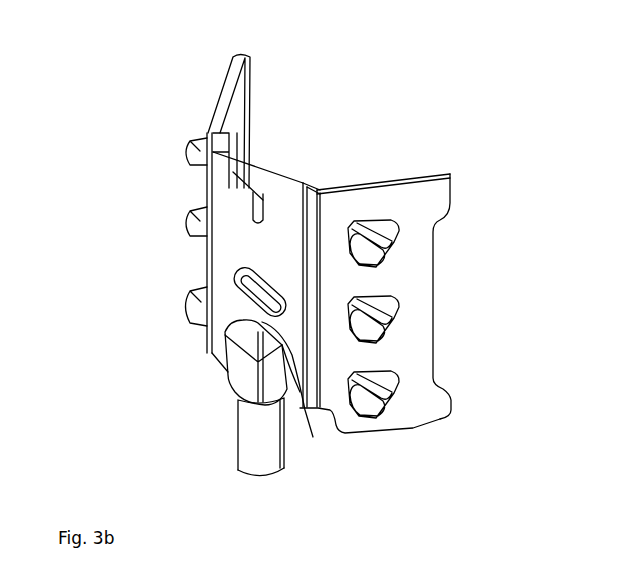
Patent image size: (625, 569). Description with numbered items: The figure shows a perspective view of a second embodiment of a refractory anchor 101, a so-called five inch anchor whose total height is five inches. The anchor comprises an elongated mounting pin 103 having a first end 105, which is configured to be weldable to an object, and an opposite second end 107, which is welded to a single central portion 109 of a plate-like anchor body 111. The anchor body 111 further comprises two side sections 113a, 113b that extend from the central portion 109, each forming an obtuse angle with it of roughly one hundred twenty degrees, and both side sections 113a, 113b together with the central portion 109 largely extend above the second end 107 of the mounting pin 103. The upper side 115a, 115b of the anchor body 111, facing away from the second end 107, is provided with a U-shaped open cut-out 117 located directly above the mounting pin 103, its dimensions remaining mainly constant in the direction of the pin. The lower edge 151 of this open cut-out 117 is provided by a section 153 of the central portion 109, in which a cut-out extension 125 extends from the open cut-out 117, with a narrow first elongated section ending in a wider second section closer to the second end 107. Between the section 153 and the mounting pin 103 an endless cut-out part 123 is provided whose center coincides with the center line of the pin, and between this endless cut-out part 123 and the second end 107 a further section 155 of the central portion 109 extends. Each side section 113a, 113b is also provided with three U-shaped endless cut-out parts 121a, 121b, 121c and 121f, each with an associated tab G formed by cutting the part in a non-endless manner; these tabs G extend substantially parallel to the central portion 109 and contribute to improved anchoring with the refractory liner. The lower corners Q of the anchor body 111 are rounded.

The refractory anchor 101 is at (374, 130).
The elongated mounting pin 103 is at (277, 448).
The first end 105 is at (237, 476).
The second end 107 is at (225, 335).
The central portion 109 is at (232, 204).
The anchor body 111 is at (181, 267).
The side section 113a is at (415, 417).
The side section 113b is at (232, 117).
The upper side 115a is at (388, 180).
The upper side 115b is at (233, 58).
The open cut-out 117 is at (270, 166).
The endless cut-out part 121a is at (392, 383).
The endless cut-out part 121b is at (400, 311).
The endless cut-out part 121c is at (400, 243).
The endless cut-out part 121f is at (251, 132).
The endless cut-out part 123 is at (240, 292).
The cut-out extension 125 is at (270, 222).
The lower edge 151 is at (245, 185).
The section of the central portion 153 is at (210, 224).
The further section of the central portion 155 is at (314, 436).
The tab G is at (183, 318).
The lower corners Q is at (452, 230).